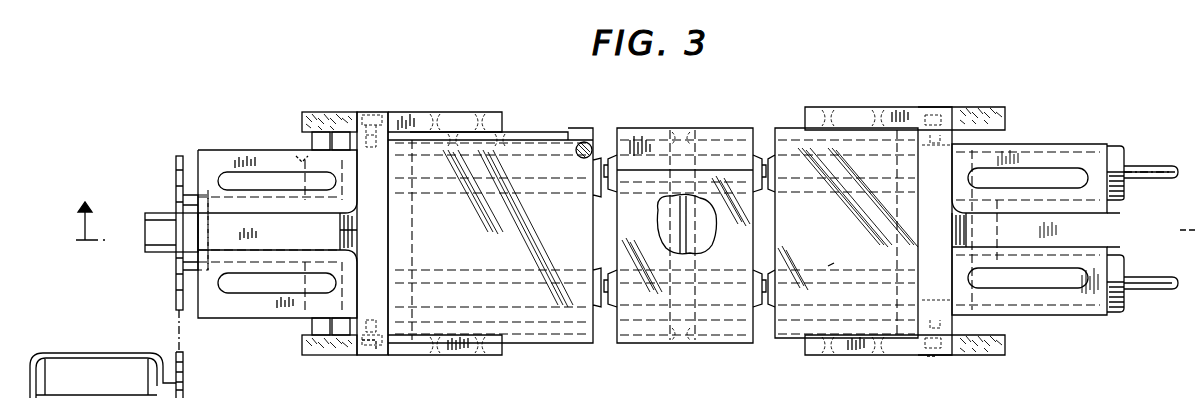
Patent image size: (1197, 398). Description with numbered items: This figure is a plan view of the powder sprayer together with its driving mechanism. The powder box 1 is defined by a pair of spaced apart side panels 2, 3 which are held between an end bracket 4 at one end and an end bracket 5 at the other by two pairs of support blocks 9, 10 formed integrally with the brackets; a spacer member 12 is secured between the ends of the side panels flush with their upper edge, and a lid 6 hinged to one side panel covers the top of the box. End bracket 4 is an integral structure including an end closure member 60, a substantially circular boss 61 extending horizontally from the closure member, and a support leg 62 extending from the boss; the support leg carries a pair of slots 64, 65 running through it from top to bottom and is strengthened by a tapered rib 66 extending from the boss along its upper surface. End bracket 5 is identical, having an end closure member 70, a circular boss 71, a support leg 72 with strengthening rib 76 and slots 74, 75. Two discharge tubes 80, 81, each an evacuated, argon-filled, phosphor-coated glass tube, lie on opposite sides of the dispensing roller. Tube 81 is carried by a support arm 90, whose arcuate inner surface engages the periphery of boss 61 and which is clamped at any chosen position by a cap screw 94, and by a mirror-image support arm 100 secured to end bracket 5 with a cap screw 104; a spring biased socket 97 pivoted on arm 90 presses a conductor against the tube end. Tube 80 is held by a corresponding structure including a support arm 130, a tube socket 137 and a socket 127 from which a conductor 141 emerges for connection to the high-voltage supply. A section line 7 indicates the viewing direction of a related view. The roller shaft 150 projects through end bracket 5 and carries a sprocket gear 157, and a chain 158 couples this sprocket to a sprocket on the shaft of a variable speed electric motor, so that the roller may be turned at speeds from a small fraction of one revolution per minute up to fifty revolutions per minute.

The powder box 1 is at (724, 122).
The side panel 2 is at (794, 116).
The side panel 3 is at (794, 349).
The end bracket 4 is at (1053, 322).
The end bracket 5 is at (291, 335).
The lid 6 is at (494, 235).
The section line 7 is at (658, 106).
The support blocks 9 is at (862, 106).
The support blocks 10 is at (474, 108).
The spacer member 12 is at (704, 250).
The end closure member 60 is at (918, 106).
The circular boss 61 is at (952, 140).
The support leg 62 is at (1058, 146).
The slot 64 is at (1022, 272).
The slot 65 is at (1050, 178).
The tapered rib 66 is at (1098, 232).
The end closure member 70 is at (396, 140).
The circular boss 71 is at (362, 145).
The support leg 72 is at (222, 149).
The slot 74 is at (260, 280).
The slot 75 is at (265, 195).
The strengthening rib 76 is at (311, 231).
The discharge tube 80 is at (796, 196).
The discharge tube 81 is at (832, 268).
The support arm 90 is at (984, 355).
The cap screw 94 is at (930, 358).
The spring biased socket 97 is at (1135, 249).
The support arm 100 is at (356, 358).
The cap screw 104 is at (376, 352).
The socket 127 is at (1126, 128).
The support arm 130 is at (350, 110).
The tube socket 137 is at (302, 152).
The conductor 141 is at (1150, 166).
The shaft 150 is at (145, 252).
The sprocket gear 157 is at (172, 160).
The chain 158 is at (186, 350).